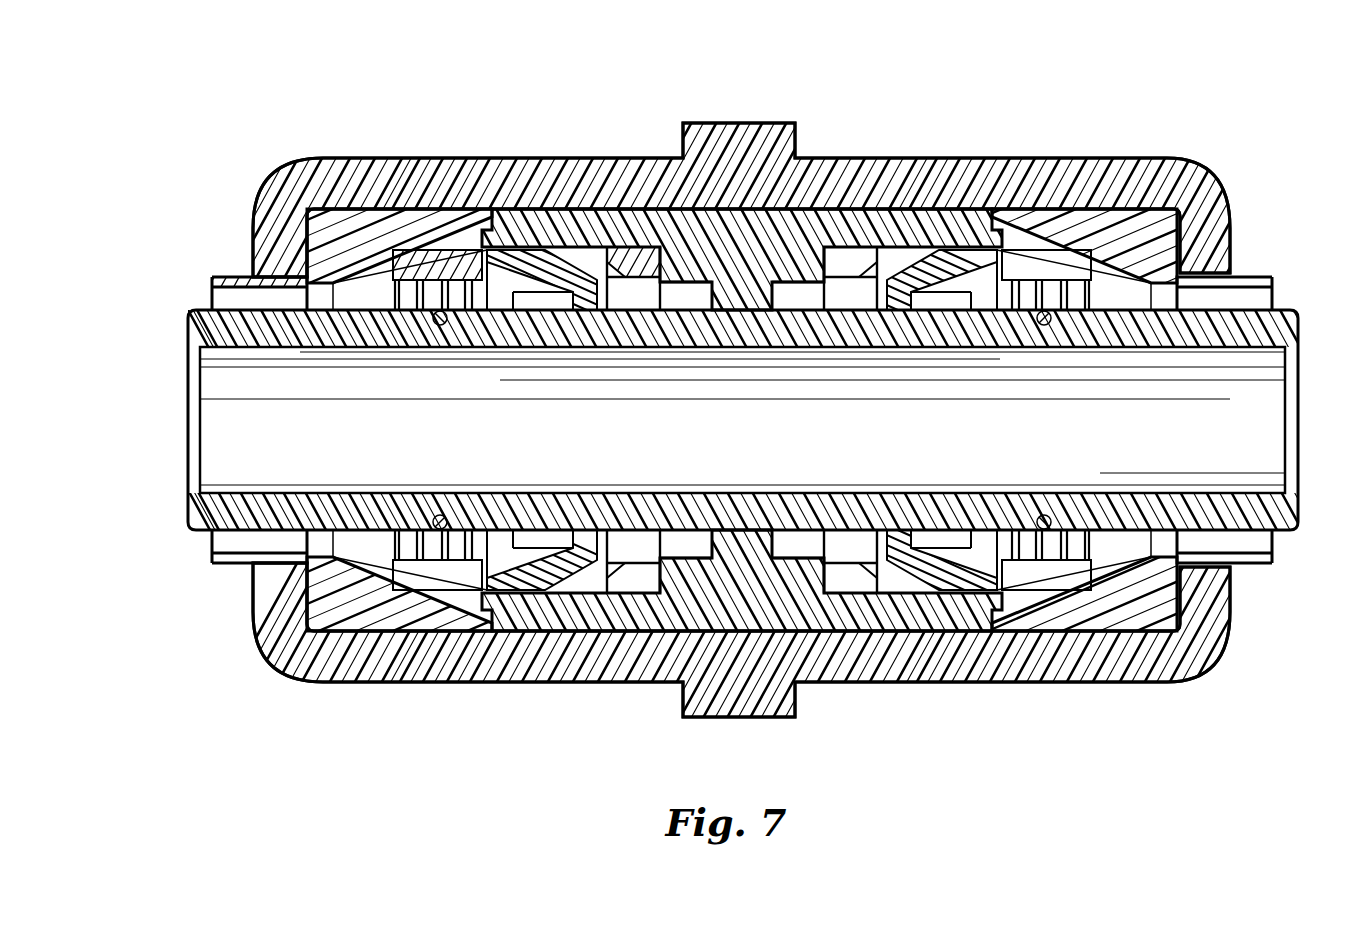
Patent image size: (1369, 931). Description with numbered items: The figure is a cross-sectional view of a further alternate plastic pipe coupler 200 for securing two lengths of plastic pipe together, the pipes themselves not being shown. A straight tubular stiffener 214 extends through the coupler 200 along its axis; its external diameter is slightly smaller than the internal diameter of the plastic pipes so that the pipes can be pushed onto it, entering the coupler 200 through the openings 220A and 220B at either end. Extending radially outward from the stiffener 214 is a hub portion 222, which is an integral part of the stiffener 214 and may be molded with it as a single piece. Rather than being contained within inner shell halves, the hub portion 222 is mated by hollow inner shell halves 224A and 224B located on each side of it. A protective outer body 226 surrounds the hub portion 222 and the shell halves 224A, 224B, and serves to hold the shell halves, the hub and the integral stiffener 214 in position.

The coupler 200 is at (966, 135).
The tubular stiffener 214 is at (1242, 327).
The opening 220A is at (233, 298).
The opening 220B is at (1225, 295).
The hub portion 222 is at (728, 247).
The inner shell half 224A is at (383, 216).
The inner shell half 224B is at (1120, 233).
The protective outer body 226 is at (643, 180).